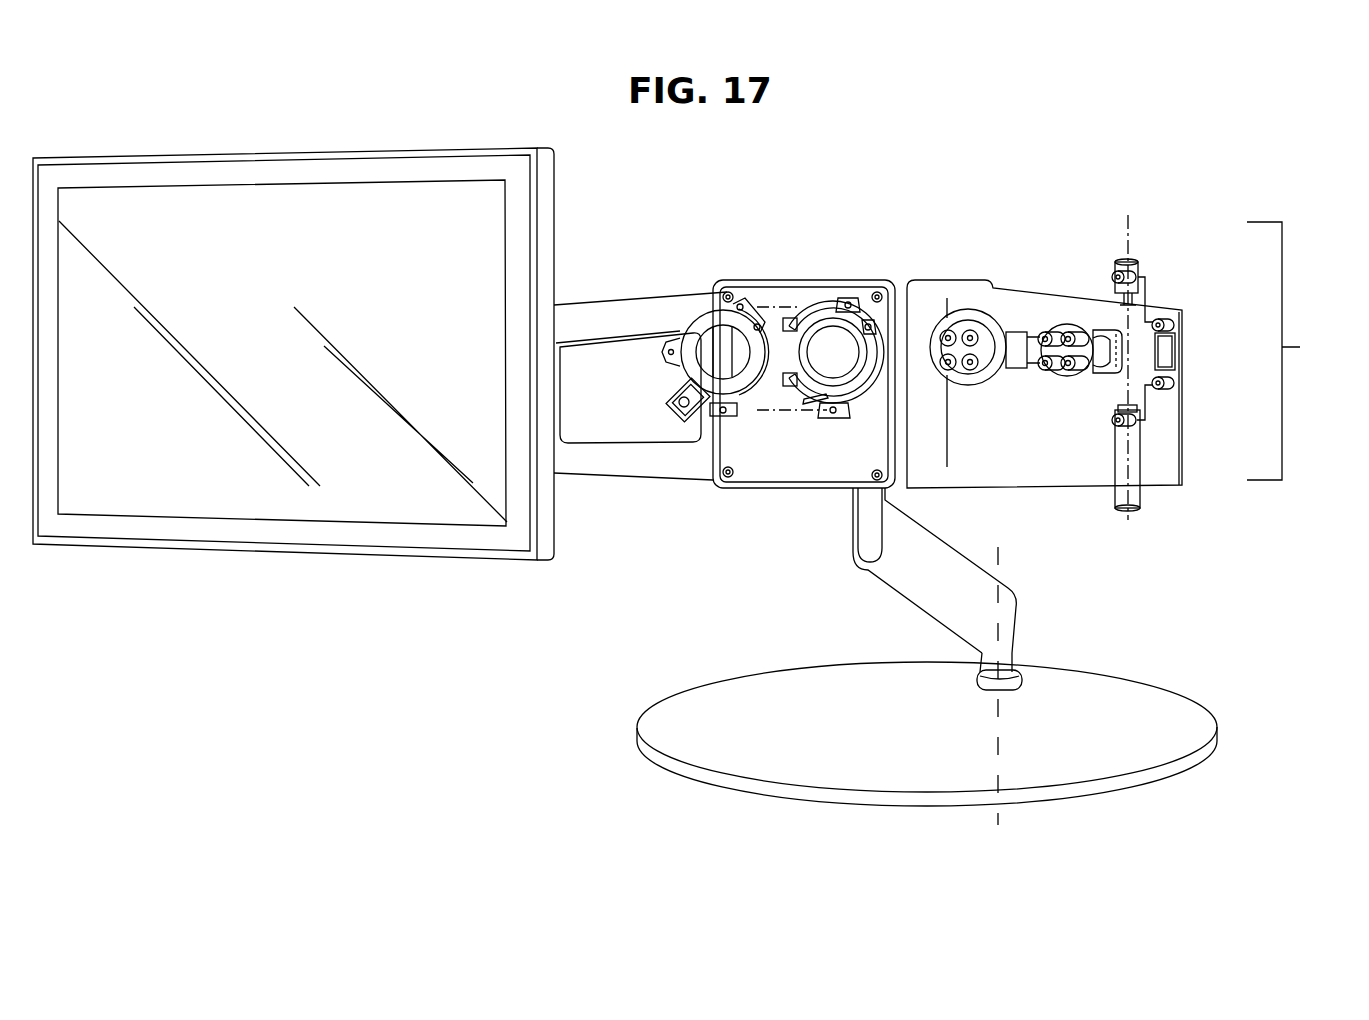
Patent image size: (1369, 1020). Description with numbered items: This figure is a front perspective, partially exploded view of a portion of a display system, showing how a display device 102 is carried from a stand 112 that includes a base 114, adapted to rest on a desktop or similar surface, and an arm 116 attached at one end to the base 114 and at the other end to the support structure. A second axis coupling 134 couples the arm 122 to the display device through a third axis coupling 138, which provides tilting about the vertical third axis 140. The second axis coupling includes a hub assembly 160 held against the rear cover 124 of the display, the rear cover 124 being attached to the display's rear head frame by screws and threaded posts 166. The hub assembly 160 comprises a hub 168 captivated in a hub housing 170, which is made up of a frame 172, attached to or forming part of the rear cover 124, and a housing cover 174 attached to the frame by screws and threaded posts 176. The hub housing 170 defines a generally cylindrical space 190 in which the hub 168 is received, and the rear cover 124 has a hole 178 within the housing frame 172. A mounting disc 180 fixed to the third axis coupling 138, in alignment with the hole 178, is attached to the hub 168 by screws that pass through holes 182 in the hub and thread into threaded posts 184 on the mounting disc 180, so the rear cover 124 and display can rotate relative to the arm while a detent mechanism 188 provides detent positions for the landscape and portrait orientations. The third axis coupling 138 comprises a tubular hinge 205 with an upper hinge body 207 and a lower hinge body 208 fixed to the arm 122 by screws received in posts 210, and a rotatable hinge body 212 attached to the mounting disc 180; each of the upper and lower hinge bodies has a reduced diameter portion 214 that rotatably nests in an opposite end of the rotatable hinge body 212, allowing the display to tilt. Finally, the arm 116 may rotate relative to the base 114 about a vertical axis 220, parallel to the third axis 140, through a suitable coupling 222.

The display device 102 is at (253, 167).
The stand 112 is at (1036, 611).
The base 114 is at (725, 745).
The arm 116 is at (993, 626).
The arm 122 is at (610, 308).
The rear cover 124 is at (780, 489).
The second axis coupling 134 is at (916, 464).
The third axis coupling 138 is at (1235, 198).
The third axis 140 is at (1128, 243).
The hub assembly 160 is at (1005, 300).
The threaded posts 166 is at (722, 288).
The hub 168 is at (963, 313).
The hub housing 170 is at (802, 418).
The frame 172 is at (812, 297).
The housing cover 174 is at (690, 328).
The threaded posts 176 is at (845, 298).
The hole 178 is at (828, 352).
The mounting disc 180 is at (1068, 328).
The holes 182 is at (970, 366).
The threaded posts 184 is at (1067, 370).
The detent mechanism 188 is at (660, 413).
The cylindrical space 190 is at (802, 303).
The tubular hinge 205 is at (1297, 351).
The upper hinge body 207 is at (1140, 262).
The lower hinge body 208 is at (1137, 453).
The posts 210 is at (1170, 323).
The rotatable hinge body 212 is at (1110, 360).
The reduced diameter portion 214 is at (1140, 295).
The axis 220 is at (1000, 718).
The coupling 222 is at (1031, 680).